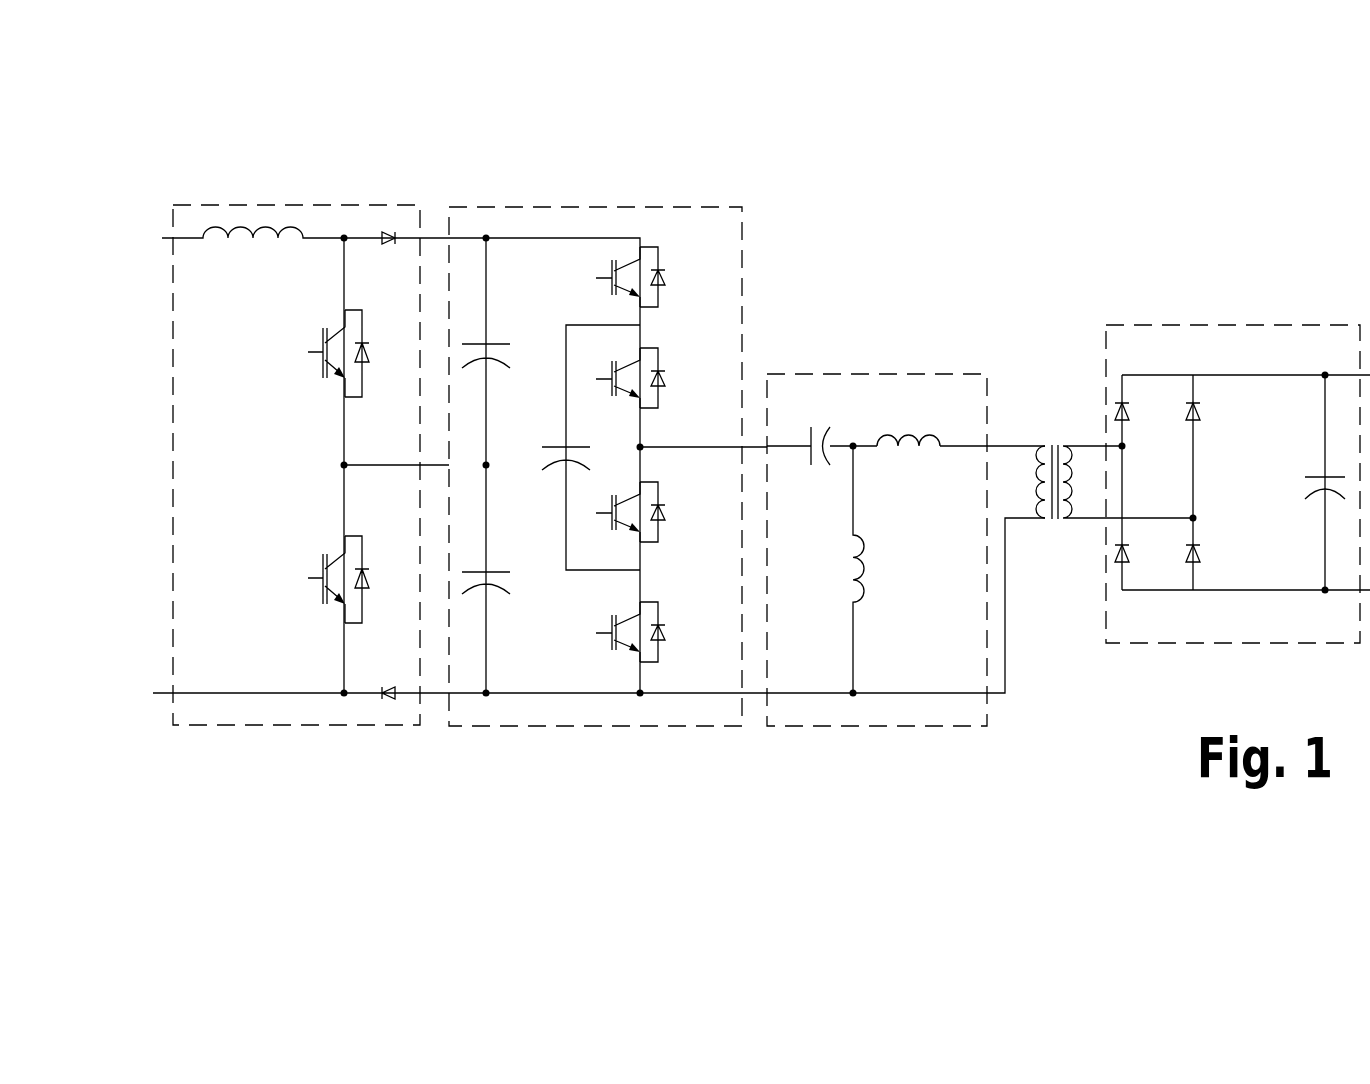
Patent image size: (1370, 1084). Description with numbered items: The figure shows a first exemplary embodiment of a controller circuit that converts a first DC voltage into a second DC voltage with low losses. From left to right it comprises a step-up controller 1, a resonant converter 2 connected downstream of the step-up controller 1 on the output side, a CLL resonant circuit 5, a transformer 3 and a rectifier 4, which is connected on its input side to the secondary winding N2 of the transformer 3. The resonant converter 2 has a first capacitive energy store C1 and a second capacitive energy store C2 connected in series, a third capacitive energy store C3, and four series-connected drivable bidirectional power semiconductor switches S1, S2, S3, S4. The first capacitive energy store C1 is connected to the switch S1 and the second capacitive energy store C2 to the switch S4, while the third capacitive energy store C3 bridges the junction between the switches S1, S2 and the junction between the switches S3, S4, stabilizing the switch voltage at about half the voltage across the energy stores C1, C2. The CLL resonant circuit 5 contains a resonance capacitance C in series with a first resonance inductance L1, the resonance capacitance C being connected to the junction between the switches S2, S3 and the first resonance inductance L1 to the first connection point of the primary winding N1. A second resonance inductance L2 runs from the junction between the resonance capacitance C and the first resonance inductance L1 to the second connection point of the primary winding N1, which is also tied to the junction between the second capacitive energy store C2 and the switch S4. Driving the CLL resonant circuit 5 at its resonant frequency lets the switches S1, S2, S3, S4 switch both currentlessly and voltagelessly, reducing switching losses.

The step-up controller 1 is at (258, 205).
The resonant converter 2 is at (595, 394).
The transformer 3 is at (1026, 311).
The rectifier 4 is at (1223, 325).
The CLL resonant circuit 5 is at (877, 394).
The first capacitive energy store C1 is at (497, 351).
The second capacitive energy store C2 is at (497, 579).
The third capacitive energy store C3 is at (578, 447).
The first drivable bidirectional power semiconductor switch S1 is at (656, 277).
The second drivable bidirectional power semiconductor switch S2 is at (656, 378).
The third drivable bidirectional power semiconductor switch S3 is at (656, 512).
The fourth drivable bidirectional power semiconductor switch S4 is at (656, 632).
The resonance capacitance C is at (820, 429).
The first resonance inductance L1 is at (908, 419).
The second resonance inductance L2 is at (880, 569).
The primary winding N1 is at (1033, 503).
The secondary winding N2 is at (1075, 462).